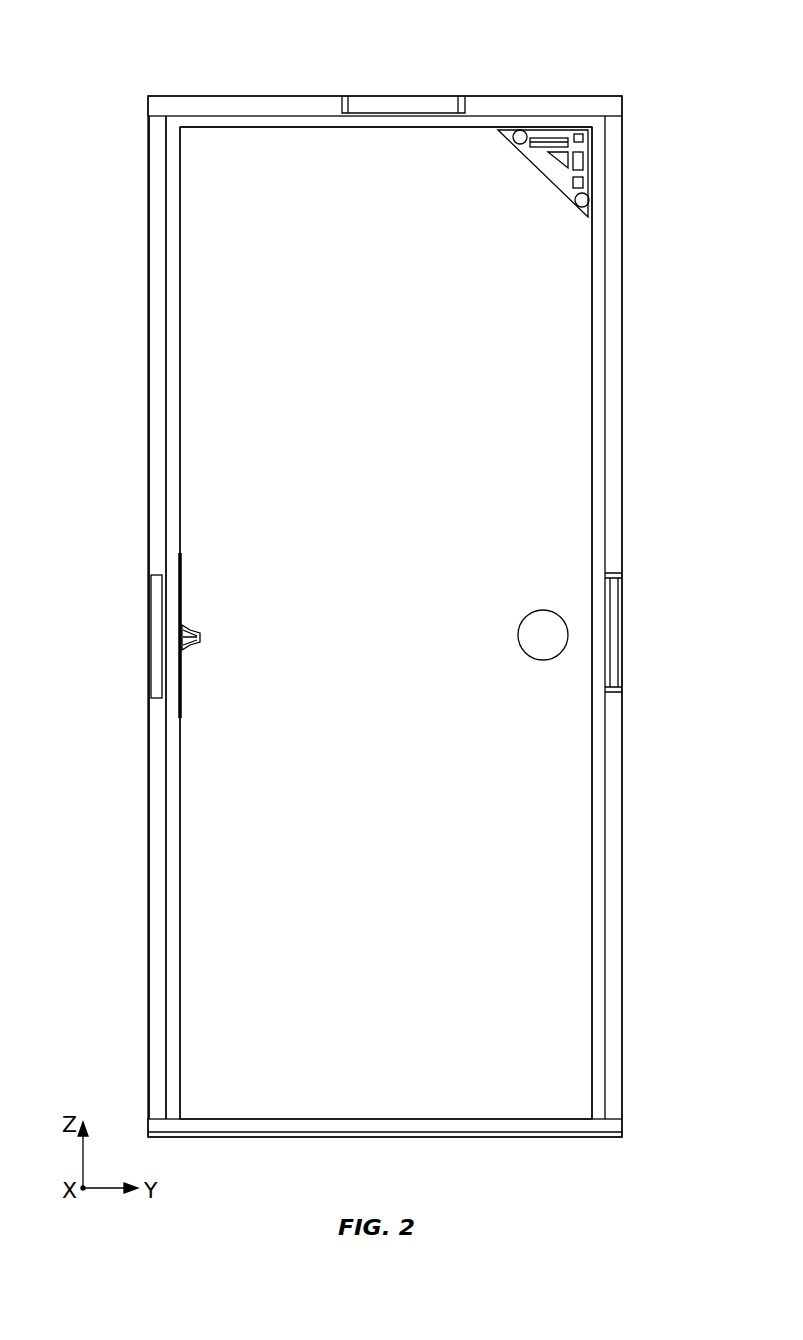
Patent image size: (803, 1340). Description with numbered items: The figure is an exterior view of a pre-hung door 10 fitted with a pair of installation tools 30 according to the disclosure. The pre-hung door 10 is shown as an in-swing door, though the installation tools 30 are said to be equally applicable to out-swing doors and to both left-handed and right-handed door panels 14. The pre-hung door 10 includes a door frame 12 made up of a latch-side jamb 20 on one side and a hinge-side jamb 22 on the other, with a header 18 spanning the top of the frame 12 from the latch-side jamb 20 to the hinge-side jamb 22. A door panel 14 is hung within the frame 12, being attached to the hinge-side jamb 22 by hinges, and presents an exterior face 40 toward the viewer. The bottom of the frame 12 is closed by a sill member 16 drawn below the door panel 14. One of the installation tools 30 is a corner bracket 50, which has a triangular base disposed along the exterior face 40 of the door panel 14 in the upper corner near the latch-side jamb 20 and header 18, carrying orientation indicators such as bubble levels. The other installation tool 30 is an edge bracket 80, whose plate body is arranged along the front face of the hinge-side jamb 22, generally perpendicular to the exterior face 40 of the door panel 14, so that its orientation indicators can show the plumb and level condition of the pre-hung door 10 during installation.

The pre-hung door 10 is at (192, 72).
The door frame 12 is at (152, 298).
The door panel 14 is at (560, 960).
The bottom rail 16 is at (540, 1122).
The header 18 is at (482, 105).
The latch-side jamb 20 is at (617, 257).
The hinge-side jamb 22 is at (152, 764).
The installation tools 30 is at (175, 655).
The exterior face 40 is at (396, 533).
The corner bracket 50 is at (578, 139).
The edge bracket 80 is at (182, 595).